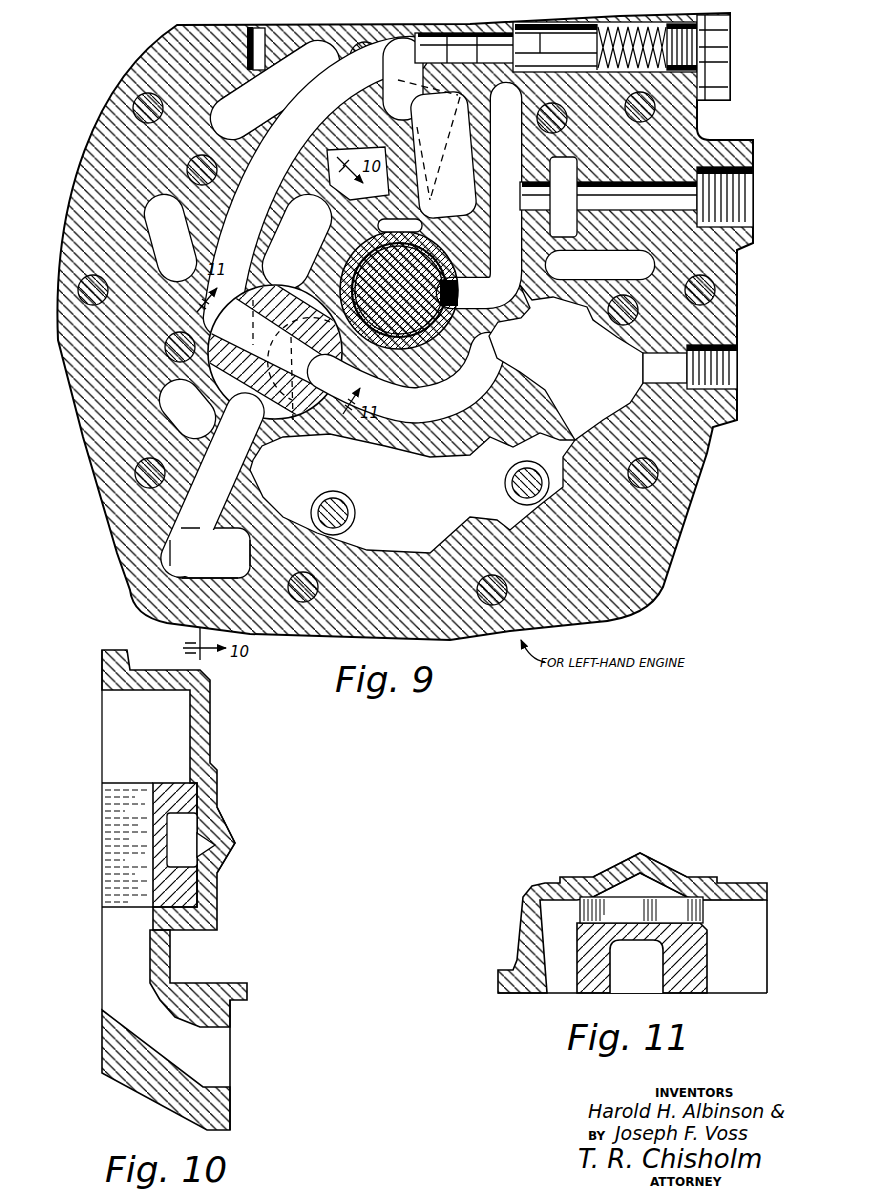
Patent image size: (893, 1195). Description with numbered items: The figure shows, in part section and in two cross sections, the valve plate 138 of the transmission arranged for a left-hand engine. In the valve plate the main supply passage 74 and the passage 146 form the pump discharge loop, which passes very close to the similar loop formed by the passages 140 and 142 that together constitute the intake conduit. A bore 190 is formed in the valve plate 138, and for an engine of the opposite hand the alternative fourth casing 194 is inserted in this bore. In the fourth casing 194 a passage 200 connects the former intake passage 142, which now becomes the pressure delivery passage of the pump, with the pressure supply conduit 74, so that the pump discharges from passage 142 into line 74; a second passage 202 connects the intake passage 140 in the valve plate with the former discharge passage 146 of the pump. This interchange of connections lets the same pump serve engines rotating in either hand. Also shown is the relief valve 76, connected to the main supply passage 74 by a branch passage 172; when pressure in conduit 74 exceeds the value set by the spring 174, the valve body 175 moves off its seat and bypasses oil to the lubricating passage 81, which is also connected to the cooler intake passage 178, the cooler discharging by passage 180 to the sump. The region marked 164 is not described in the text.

In FIG. 9, the relief valve 76 is at (720, 62).
In FIG. 9, the lubricating passage 81 is at (507, 262).
In FIG. 11, the main supply passage 74 is at (563, 985).
In FIG. 10, the valve plate 138 is at (222, 827).
In FIG. 11, the valve plate 138 is at (643, 863).
In FIG. 9, the intake passage 140 is at (243, 450).
In FIG. 10, the intake passage 140 is at (210, 1052).
In FIG. 9, the intake passage 142 is at (462, 420).
In FIG. 11, the intake passage 142 is at (750, 975).
In FIG. 9, the discharge passage 146 is at (257, 212).
In FIG. 10, the discharge passage 146 is at (117, 741).
In FIG. 9, the passage 164 is at (433, 178).
In FIG. 9, the branch passage 172 is at (447, 50).
In FIG. 9, the spring 174 is at (600, 52).
In FIG. 9, the valve body 175 is at (487, 195).
In FIG. 9, the cooler intake passage 178 is at (550, 206).
In FIG. 9, the cooler discharge passage 180 is at (662, 371).
In FIG. 9, the bore 190 is at (197, 307).
In FIG. 9, the fourth casing 194 is at (237, 341).
In FIG. 10, the fourth casing 194 is at (190, 787).
In FIG. 11, the fourth casing 194 is at (690, 985).
In FIG. 9, the passage 200 is at (275, 342).
In FIG. 10, the passage 200 is at (190, 815).
In FIG. 11, the passage 200 is at (700, 912).
In FIG. 9, the passage 202 is at (270, 420).
In FIG. 10, the passage 202 is at (117, 852).
In FIG. 11, the passage 202 is at (660, 975).